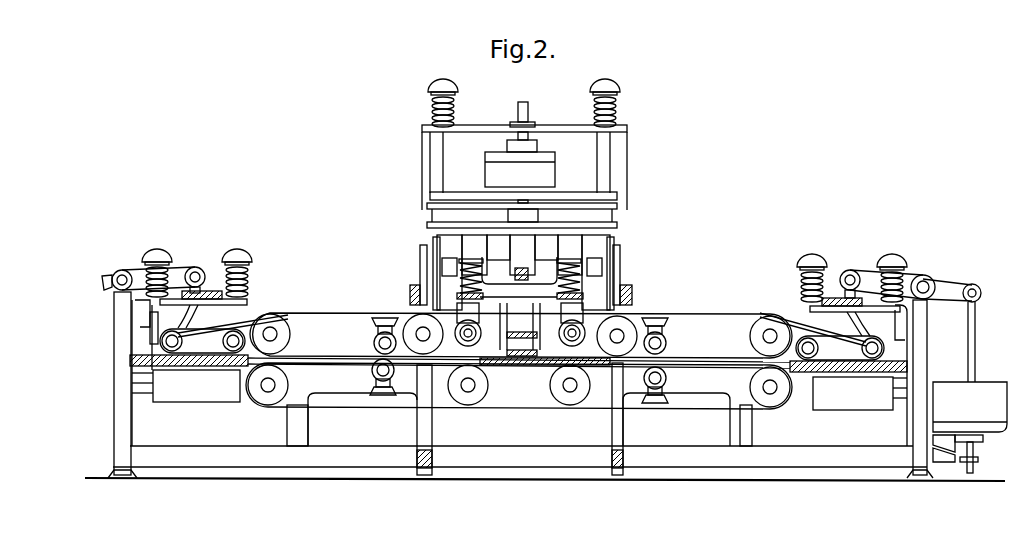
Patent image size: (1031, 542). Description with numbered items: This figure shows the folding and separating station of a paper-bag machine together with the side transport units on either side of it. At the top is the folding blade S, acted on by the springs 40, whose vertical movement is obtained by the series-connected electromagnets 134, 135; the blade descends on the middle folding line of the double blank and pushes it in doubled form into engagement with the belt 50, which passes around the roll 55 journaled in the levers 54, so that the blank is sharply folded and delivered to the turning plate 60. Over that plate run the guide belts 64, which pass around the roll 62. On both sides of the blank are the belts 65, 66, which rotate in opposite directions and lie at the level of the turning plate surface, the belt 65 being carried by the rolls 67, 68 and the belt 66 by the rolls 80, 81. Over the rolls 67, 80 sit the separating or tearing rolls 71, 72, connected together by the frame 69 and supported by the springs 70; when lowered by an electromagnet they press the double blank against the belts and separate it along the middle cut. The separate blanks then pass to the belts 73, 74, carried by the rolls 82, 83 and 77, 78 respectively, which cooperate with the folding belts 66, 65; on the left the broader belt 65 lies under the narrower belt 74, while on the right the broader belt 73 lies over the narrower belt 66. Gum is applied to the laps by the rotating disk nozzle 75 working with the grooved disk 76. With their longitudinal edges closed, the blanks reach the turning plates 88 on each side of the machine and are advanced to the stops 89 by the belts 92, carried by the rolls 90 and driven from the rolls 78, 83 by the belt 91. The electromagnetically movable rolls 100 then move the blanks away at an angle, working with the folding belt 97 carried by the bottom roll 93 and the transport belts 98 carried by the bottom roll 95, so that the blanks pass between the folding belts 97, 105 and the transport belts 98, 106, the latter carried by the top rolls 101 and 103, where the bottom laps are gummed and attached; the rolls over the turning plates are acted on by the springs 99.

The springs 40 is at (457, 105).
The folding blade S is at (560, 208).
The electromagnet 134 is at (540, 146).
The electromagnet 135 is at (486, 158).
The frame 69 is at (523, 272).
The roll 55 is at (640, 226).
The belt 50 is at (521, 255).
The springs 70 is at (521, 279).
The levers 54 is at (418, 283).
The guide belts 64 is at (518, 303).
The roll 62 is at (522, 344).
The tearing roll 71 is at (461, 322).
The tearing roll 72 is at (581, 322).
The upper belt 74 is at (355, 313).
The folding belt 73 is at (701, 314).
The roll 78 is at (283, 320).
The roll 77 is at (415, 322).
The roll 82 is at (625, 326).
The roll 83 is at (764, 324).
The disk nozzle 75 is at (374, 341).
The grooved disk 76 is at (372, 375).
The stops 89 is at (135, 354).
The folding belt 65 is at (368, 408).
The turning plate 60 is at (510, 383).
The folding belt 66 is at (680, 410).
The roll 68 is at (284, 385).
The roll 67 is at (482, 399).
The roll 80 is at (556, 400).
The roll 81 is at (768, 404).
The top roll 101 is at (107, 340).
The springs 99 is at (172, 262).
The transport belt 106 is at (252, 292).
The folding belt 105 is at (802, 310).
The top roll 103 is at (927, 340).
The rolls 100 is at (930, 318).
The belt 91 is at (250, 322).
The rolls 90 is at (222, 342).
The turning plates 88 is at (523, 390).
The belts 92 is at (220, 366).
The bottom roll 93 is at (152, 402).
The folding belt 97 is at (216, 403).
The transport belts 98 is at (855, 411).
The bottom roll 95 is at (896, 411).